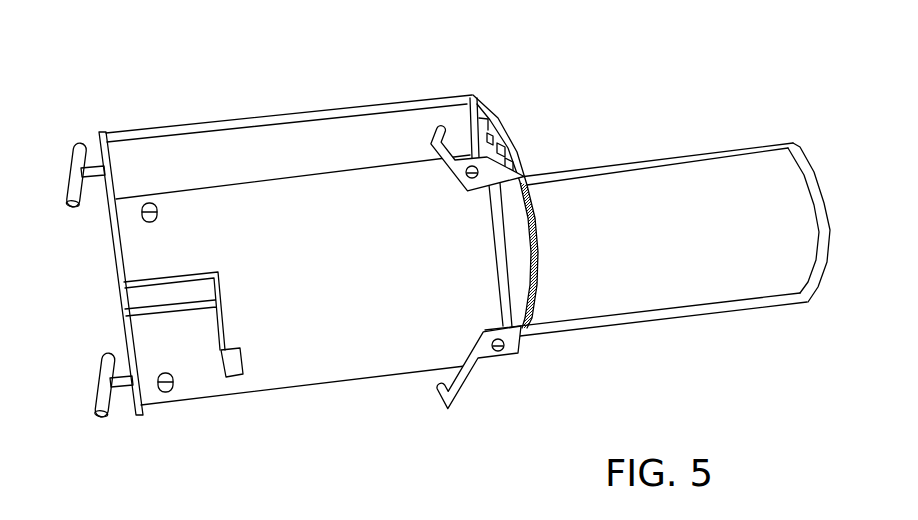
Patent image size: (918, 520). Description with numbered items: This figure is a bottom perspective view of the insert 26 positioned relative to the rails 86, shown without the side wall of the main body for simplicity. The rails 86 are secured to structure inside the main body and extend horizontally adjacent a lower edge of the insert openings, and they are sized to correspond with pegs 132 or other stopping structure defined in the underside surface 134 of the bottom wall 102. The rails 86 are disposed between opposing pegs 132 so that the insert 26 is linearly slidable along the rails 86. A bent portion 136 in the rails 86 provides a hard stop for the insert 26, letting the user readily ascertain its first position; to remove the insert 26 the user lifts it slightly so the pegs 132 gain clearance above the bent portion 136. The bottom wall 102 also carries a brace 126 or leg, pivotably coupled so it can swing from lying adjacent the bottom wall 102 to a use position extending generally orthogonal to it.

The insert 26 is at (239, 102).
The rails 86 is at (690, 155).
The bottom wall 102 is at (288, 358).
The brace 126 is at (223, 317).
The pegs 132 is at (468, 165).
The underside surface 134 is at (368, 362).
The bent portion 136 is at (452, 180).